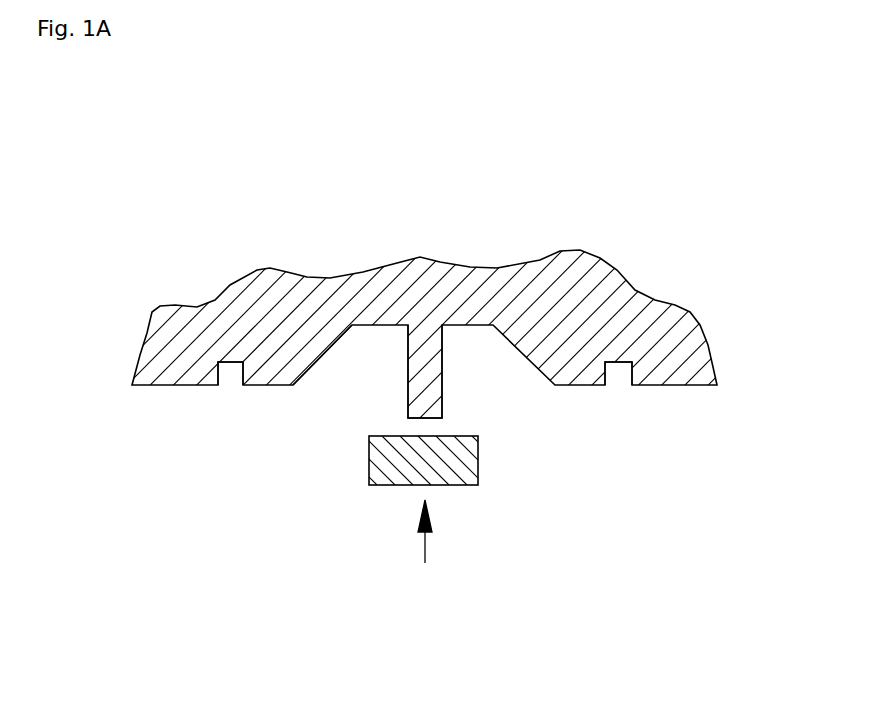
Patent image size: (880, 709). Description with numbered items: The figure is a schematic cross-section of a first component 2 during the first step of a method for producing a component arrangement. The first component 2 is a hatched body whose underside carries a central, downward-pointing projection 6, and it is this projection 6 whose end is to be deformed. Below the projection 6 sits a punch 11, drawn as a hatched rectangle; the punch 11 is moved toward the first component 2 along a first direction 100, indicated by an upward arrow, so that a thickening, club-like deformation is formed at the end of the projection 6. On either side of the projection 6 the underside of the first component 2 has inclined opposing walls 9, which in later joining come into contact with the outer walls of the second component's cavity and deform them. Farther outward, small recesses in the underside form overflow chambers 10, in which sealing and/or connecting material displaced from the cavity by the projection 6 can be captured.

The first component 2 is at (482, 293).
The overflow chambers 10 is at (228, 357).
The opposing walls 9 is at (322, 354).
The projection 6 is at (432, 392).
The punch 11 is at (457, 470).
The first direction 100 is at (427, 545).